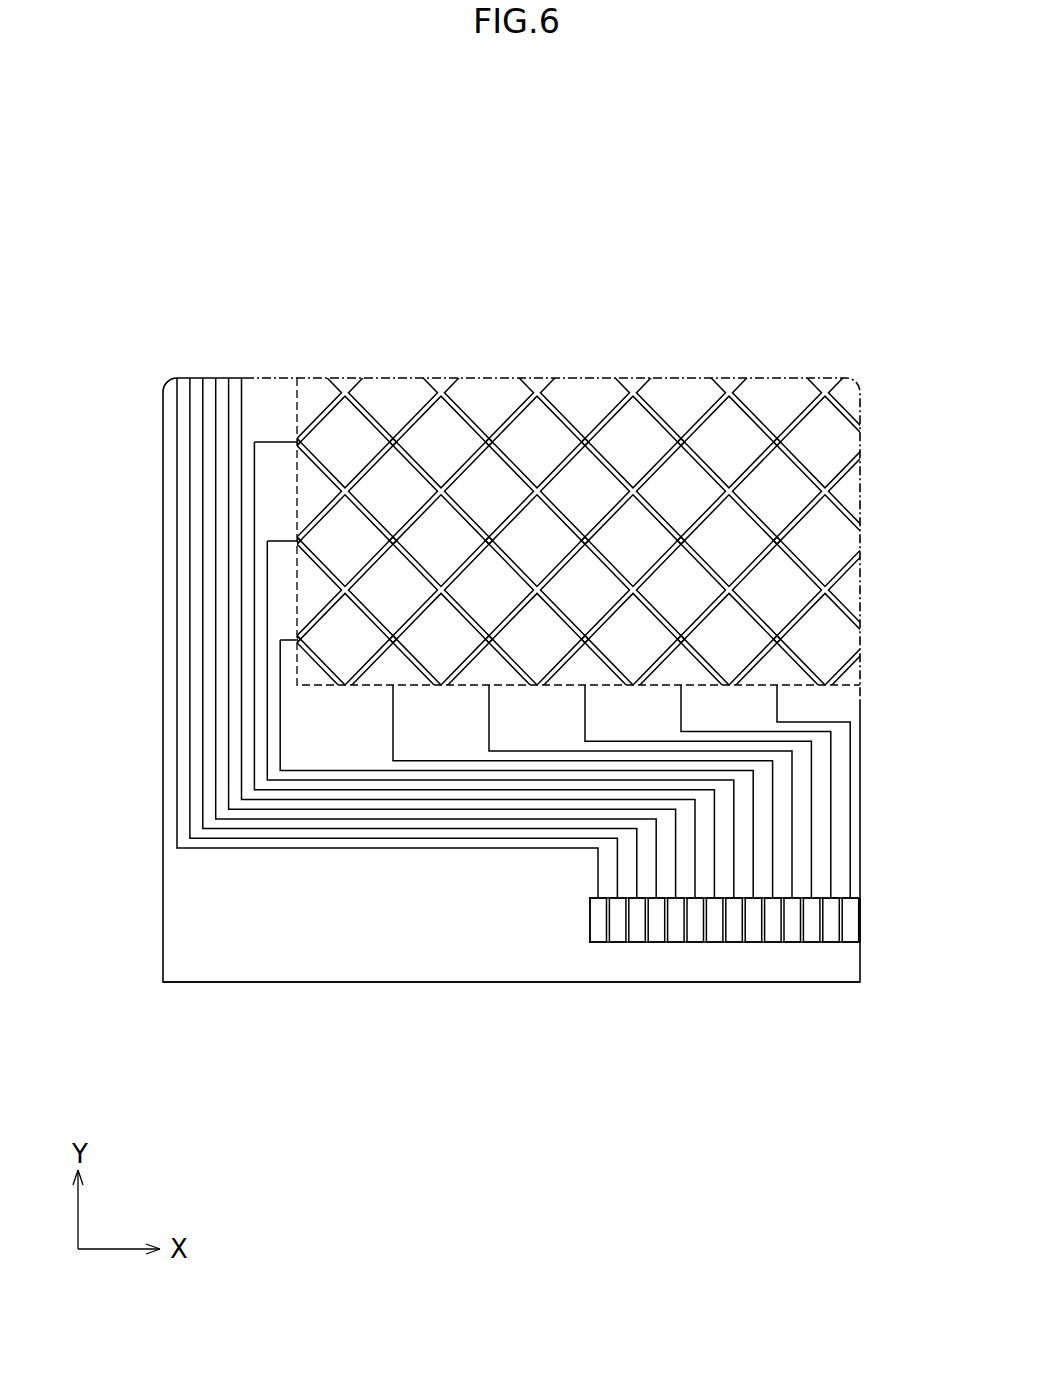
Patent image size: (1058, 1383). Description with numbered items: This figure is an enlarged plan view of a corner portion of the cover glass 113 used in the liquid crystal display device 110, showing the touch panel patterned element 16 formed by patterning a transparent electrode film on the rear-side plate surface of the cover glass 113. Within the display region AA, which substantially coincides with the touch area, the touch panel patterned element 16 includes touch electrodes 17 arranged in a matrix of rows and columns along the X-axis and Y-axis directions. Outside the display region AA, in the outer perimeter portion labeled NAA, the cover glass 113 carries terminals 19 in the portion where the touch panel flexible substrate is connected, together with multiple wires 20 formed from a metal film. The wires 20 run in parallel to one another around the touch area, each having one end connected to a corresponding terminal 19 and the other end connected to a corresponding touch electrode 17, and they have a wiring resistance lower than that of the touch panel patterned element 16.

The touch panel patterned element 16 is at (780, 403).
The touch electrodes 17 is at (355, 538).
The terminals 19 is at (635, 933).
The wires 20 is at (215, 463).
The liquid crystal display device 110 is at (210, 983).
The cover glass 113 is at (280, 952).
The display region AA is at (297, 408).
The non-active area NAA is at (218, 892).